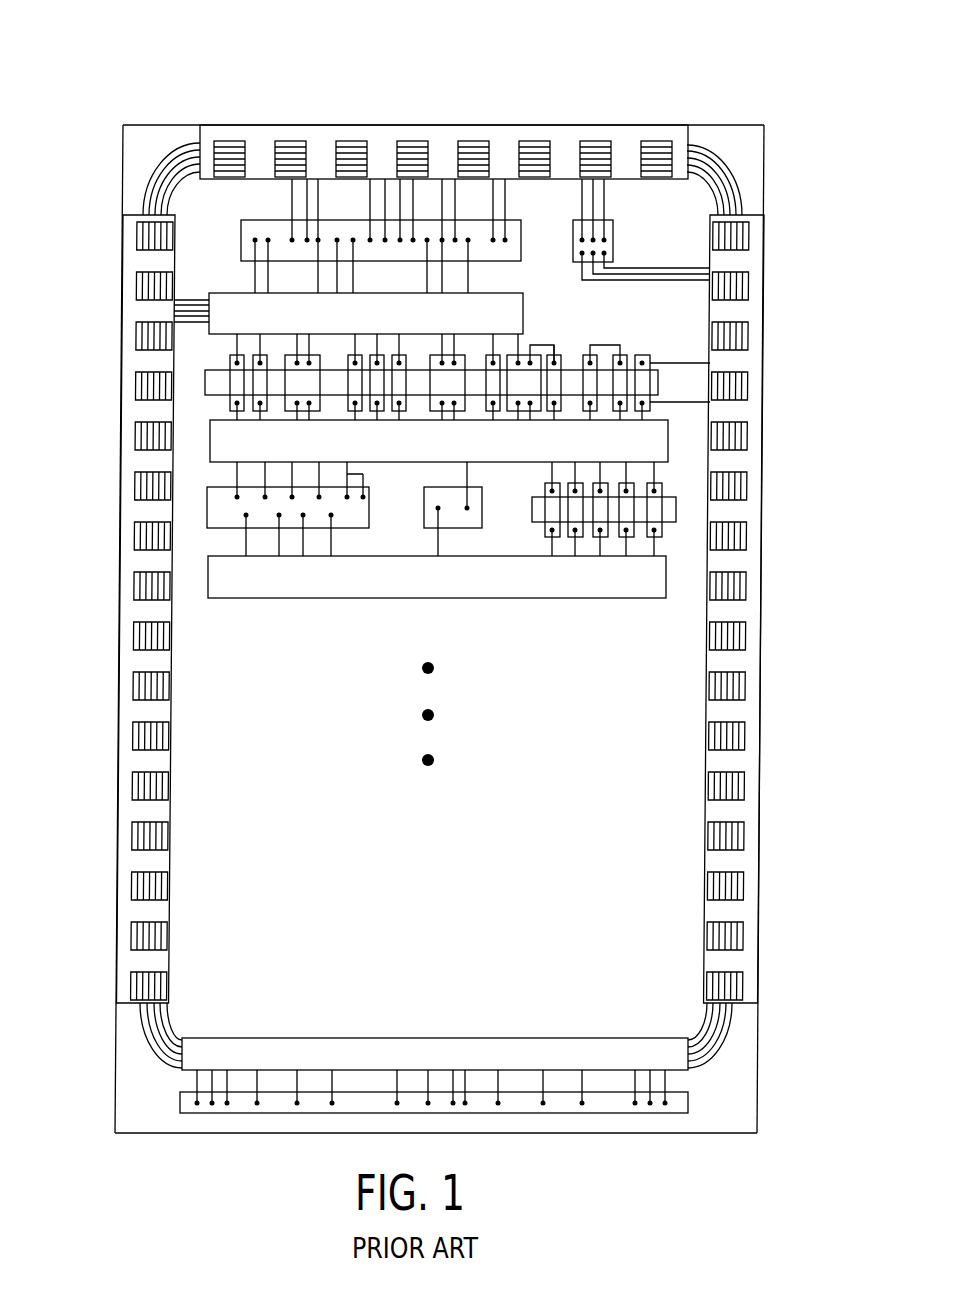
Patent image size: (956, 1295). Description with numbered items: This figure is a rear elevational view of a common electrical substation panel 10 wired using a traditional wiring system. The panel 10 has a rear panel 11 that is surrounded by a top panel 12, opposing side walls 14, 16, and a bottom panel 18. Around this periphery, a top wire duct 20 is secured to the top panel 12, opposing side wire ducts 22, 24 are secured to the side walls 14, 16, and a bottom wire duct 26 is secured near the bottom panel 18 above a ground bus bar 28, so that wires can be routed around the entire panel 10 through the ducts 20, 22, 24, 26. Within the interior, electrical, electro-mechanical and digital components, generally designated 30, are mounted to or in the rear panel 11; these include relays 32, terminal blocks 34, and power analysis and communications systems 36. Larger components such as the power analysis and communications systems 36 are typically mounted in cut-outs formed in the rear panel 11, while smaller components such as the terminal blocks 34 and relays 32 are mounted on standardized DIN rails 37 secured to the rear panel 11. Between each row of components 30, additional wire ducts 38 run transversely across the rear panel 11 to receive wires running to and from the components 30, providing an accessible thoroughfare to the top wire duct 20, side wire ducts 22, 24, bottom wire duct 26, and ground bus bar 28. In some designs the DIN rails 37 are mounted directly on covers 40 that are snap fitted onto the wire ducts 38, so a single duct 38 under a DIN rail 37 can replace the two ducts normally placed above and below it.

The electrical substation panel 10 is at (806, 89).
The rear panel 11 is at (687, 210).
The top panel 12 is at (565, 125).
The side wall 14 is at (764, 479).
The side wall 16 is at (121, 588).
The bottom panel 18 is at (558, 1133).
The top wire duct 20 is at (415, 141).
The side wire duct 22 is at (746, 378).
The side wire duct 24 is at (135, 711).
The bottom wire duct 26 is at (523, 1038).
The ground bus bar 28 is at (689, 1102).
The components 30 is at (233, 244).
The relay 32 is at (332, 350).
The terminal block 34 is at (225, 404).
The power analysis and communications system 36 is at (220, 532).
The DIN rail 37 is at (333, 397).
The additional wire duct 38 is at (524, 299).
The cover 40 is at (282, 603).